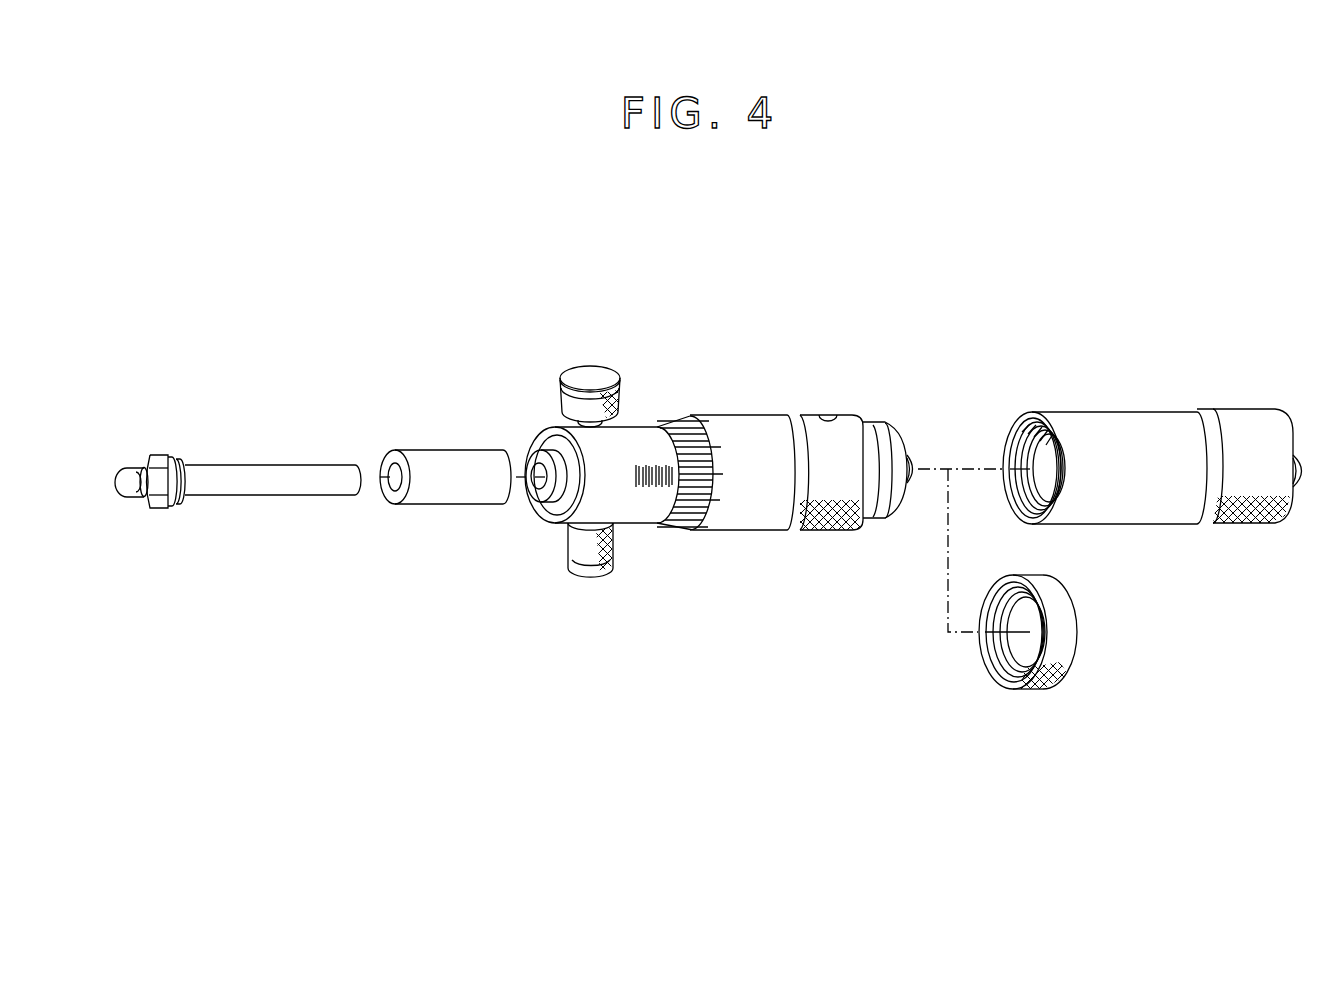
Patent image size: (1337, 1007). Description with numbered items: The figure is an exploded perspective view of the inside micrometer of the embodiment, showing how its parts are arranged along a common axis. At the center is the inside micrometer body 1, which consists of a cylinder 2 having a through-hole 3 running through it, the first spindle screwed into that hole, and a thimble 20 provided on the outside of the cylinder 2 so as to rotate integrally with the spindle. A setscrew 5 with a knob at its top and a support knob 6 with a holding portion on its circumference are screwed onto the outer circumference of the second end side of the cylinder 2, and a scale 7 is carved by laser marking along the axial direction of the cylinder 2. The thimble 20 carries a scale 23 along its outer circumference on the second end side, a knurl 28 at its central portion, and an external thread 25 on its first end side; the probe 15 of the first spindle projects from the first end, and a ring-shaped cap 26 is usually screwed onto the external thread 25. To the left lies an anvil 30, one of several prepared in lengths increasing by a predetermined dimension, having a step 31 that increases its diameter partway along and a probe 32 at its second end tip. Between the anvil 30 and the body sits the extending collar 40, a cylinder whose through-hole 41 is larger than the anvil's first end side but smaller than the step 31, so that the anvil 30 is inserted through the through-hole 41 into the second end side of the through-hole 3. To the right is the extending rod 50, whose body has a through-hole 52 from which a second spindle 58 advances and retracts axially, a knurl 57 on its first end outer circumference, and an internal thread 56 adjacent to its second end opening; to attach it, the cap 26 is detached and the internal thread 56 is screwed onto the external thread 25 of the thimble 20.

The inside micrometer body 1 is at (731, 382).
The cylinder 2 is at (585, 510).
The through-hole 3 is at (531, 463).
The setscrew 5 is at (597, 376).
The support knob 6 is at (588, 572).
The scale 7 is at (648, 483).
The probe 15 is at (915, 485).
The thimble 20 is at (760, 515).
The scale 23 is at (692, 515).
The external thread 25 is at (875, 423).
The cap 26 is at (1068, 635).
The knurl 28 is at (828, 532).
The anvil 30 is at (238, 446).
The step 31 is at (183, 503).
The probe 32 is at (118, 472).
The extending collar 40 is at (432, 430).
The through-hole 41 is at (386, 462).
The extending rod 50 is at (1135, 386).
The through-hole 52 is at (1008, 438).
The internal thread 56 is at (1022, 415).
The knurl 57 is at (1240, 524).
The second spindle 58 is at (1308, 463).